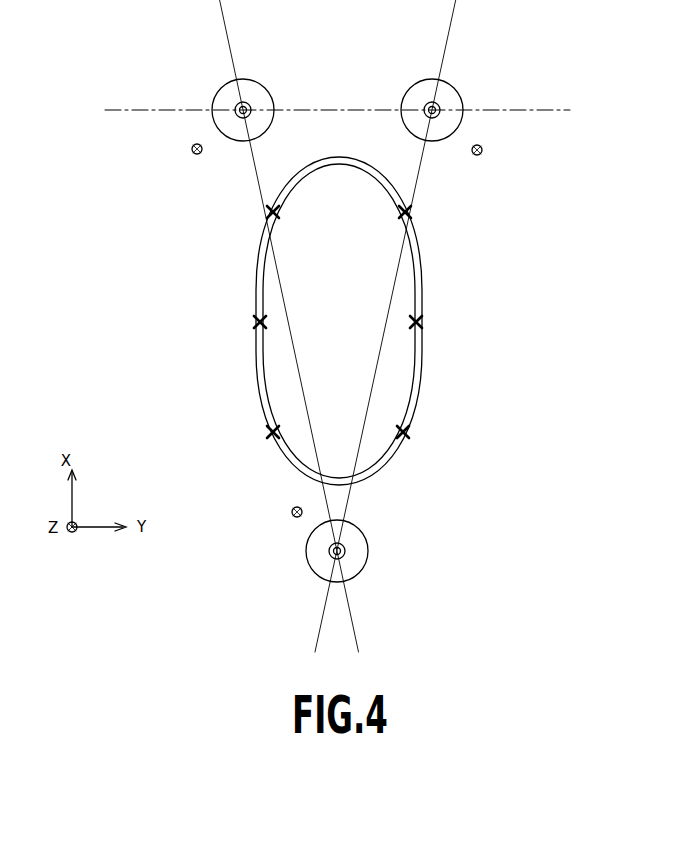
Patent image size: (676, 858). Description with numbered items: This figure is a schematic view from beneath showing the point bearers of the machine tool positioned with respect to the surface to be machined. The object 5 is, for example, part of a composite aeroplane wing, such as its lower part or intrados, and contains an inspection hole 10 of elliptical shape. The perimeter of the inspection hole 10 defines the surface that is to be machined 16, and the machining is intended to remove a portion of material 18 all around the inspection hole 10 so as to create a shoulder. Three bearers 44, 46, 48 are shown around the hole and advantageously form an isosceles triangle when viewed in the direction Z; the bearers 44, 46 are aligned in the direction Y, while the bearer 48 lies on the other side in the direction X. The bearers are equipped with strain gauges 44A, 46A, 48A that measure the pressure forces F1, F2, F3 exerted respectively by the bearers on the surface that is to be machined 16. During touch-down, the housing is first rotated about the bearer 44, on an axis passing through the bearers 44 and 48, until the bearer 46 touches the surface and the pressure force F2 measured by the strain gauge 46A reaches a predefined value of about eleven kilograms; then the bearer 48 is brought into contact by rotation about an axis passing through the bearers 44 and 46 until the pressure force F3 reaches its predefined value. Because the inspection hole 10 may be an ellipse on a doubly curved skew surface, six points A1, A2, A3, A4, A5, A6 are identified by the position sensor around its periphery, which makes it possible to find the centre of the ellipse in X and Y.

The inspection hole 10 is at (339, 321).
The object 5 is at (475, 473).
The surface that is to be machined 16 is at (348, 158).
The portion of material 18 is at (322, 158).
The bearer 44 is at (424, 104).
The strain gauge 44A is at (427, 104).
The bearer 46 is at (251, 104).
The strain gauge 46A is at (249, 104).
The bearer 48 is at (345, 548).
The strain gauge 48A is at (343, 557).
The point A1 is at (258, 435).
The point A2 is at (247, 325).
The point A3 is at (257, 214).
The point A4 is at (419, 214).
The point A5 is at (432, 325).
The point A6 is at (418, 435).
The pressure force F1 is at (483, 151).
The pressure force F2 is at (191, 150).
The pressure force F3 is at (291, 513).